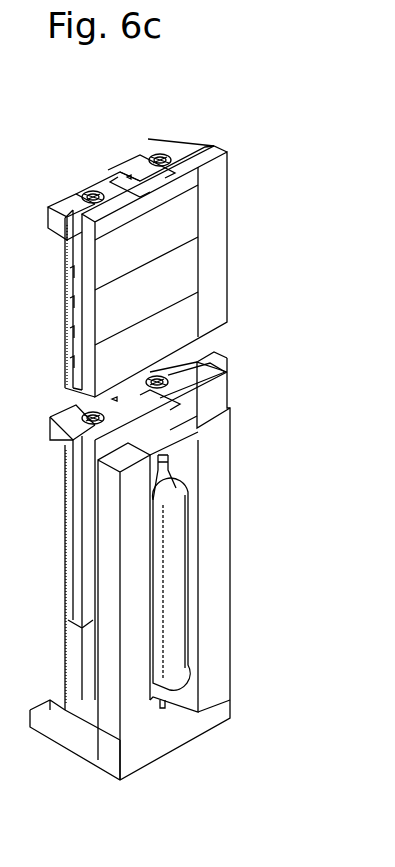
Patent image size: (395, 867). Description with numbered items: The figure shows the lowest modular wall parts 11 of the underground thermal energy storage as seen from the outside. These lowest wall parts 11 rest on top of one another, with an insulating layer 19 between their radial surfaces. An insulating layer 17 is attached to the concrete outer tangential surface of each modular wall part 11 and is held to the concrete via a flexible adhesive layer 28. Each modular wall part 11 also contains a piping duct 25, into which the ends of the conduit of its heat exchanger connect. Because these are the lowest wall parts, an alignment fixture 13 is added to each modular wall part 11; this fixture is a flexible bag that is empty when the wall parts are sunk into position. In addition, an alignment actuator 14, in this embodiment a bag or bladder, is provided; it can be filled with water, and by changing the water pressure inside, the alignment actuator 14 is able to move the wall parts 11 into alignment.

The modular wall part 11 is at (240, 203).
The alignment fixture 13 is at (137, 752).
The alignment actuator 14 is at (176, 621).
The insulating layer 17 is at (172, 287).
The insulating layer 19 is at (128, 180).
The piping duct 25 is at (88, 191).
The flexible adhesive layer 28 is at (65, 328).